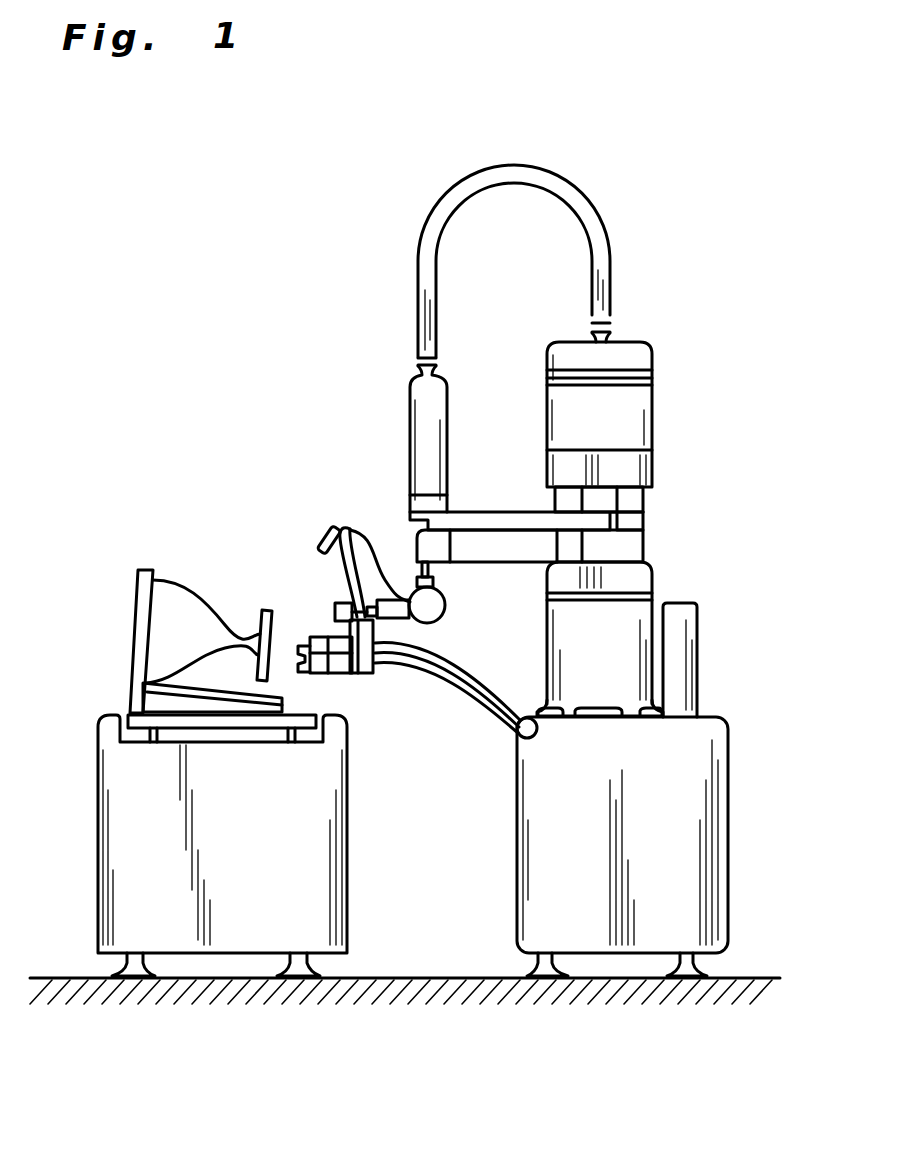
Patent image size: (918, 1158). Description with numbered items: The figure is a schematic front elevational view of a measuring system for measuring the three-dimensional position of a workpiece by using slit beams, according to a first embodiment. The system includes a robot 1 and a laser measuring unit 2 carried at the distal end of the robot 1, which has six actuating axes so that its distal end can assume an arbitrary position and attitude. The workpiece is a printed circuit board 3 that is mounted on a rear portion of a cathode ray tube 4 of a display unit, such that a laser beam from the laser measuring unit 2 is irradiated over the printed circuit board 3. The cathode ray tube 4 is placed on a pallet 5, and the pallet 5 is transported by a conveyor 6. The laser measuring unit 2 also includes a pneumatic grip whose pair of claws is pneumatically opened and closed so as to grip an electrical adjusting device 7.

The robot 1 is at (658, 430).
The laser measuring unit 2 is at (330, 592).
The printed circuit board 3 is at (258, 613).
The cathode ray tube 4 is at (163, 603).
The pallet 5 is at (168, 718).
The conveyor 6 is at (132, 838).
The electrical adjusting device 7 is at (363, 673).